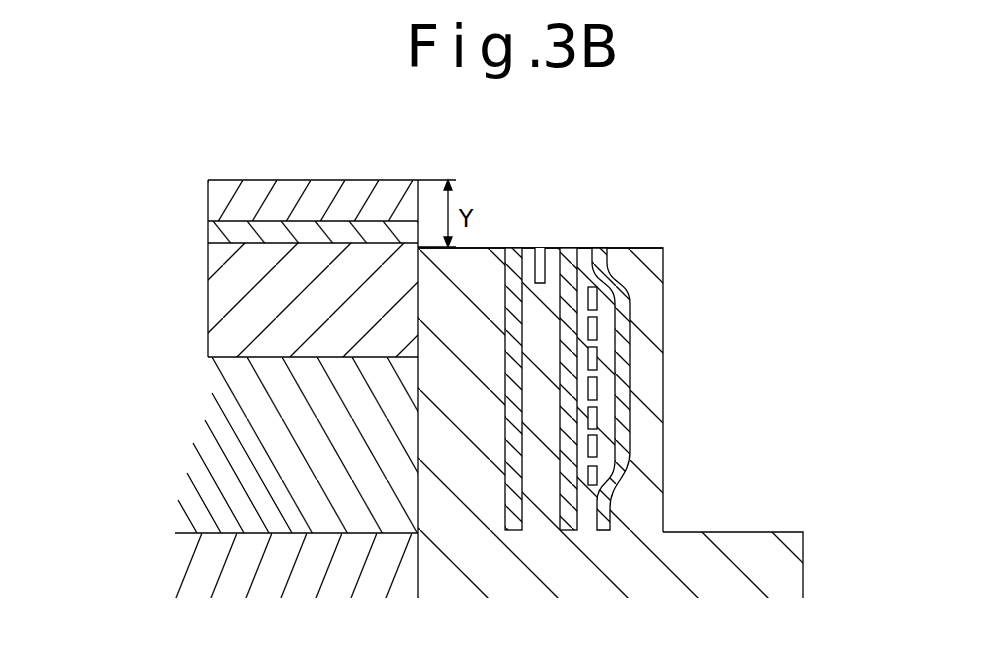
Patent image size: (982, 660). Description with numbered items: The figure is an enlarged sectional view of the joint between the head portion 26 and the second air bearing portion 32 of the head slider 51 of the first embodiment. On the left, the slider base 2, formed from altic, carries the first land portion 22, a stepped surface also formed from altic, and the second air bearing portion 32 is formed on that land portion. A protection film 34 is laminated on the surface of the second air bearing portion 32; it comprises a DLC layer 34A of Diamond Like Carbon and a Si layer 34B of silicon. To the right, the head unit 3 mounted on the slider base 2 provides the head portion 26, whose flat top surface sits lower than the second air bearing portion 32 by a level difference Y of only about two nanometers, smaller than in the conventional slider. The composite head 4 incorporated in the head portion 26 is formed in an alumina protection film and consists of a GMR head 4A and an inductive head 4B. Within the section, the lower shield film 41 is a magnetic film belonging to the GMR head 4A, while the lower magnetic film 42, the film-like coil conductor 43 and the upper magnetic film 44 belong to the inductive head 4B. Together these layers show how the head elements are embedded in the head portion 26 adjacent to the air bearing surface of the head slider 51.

The slider base 2 is at (213, 570).
The head unit 3 is at (790, 587).
The composite head 4 is at (579, 205).
The GMR head 4A is at (540, 248).
The inductive head 4B is at (602, 207).
The first land portion 22 is at (245, 444).
The head portion 26 is at (663, 447).
The second air bearing portion 32 is at (298, 180).
The protection film 34 is at (253, 216).
The DLC film 34A is at (228, 200).
The Si film 34B is at (224, 235).
The lower shield film 41 is at (513, 532).
The lower magnetic film 42 is at (566, 532).
The coil conductor 43 is at (593, 387).
The upper magnetic film 44 is at (603, 530).
The head slider 51 is at (716, 221).